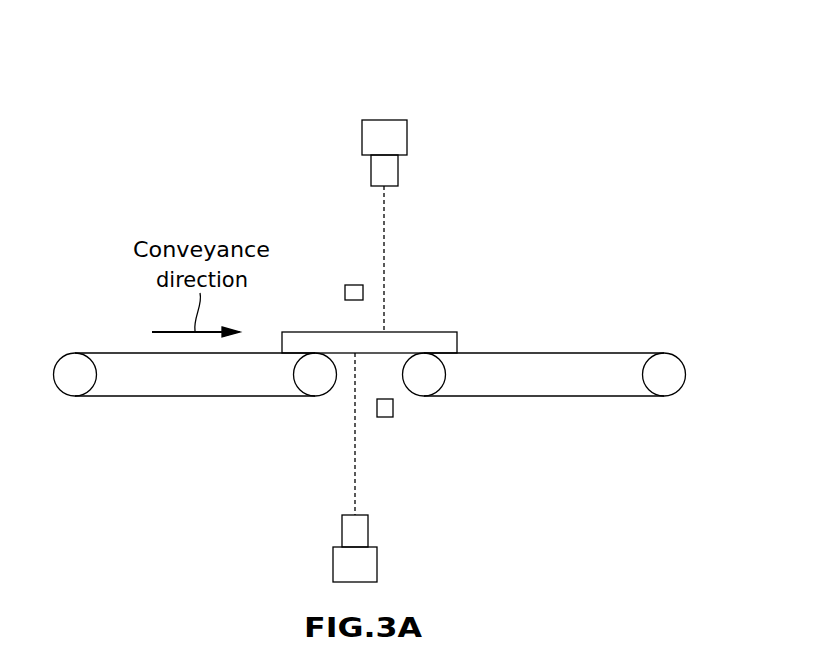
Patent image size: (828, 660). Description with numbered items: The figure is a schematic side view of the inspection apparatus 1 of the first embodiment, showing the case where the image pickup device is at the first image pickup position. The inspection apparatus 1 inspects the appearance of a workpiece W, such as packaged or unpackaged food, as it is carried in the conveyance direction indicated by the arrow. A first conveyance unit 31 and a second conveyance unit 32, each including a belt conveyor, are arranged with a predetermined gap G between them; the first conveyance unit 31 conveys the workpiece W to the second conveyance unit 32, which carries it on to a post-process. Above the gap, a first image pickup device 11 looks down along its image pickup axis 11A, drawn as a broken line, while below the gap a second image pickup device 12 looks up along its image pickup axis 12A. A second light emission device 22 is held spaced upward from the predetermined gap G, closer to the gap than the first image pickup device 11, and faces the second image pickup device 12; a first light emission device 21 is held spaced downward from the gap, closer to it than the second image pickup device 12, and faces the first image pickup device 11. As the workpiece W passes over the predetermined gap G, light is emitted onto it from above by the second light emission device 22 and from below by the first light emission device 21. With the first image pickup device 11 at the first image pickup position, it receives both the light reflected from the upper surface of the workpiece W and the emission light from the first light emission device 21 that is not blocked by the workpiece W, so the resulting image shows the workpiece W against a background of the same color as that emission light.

The inspection apparatus 1 is at (442, 92).
The first image pickup device 11 is at (407, 135).
The image pickup axis 11A is at (385, 258).
The second image pickup device 12 is at (377, 561).
The image pickup axis 12A is at (353, 480).
The first light emission device 21 is at (385, 417).
The second light emission device 22 is at (354, 285).
The first conveyance unit 31 is at (98, 353).
The second conveyance unit 32 is at (601, 353).
The workpiece W is at (432, 332).
The predetermined gap G is at (381, 372).